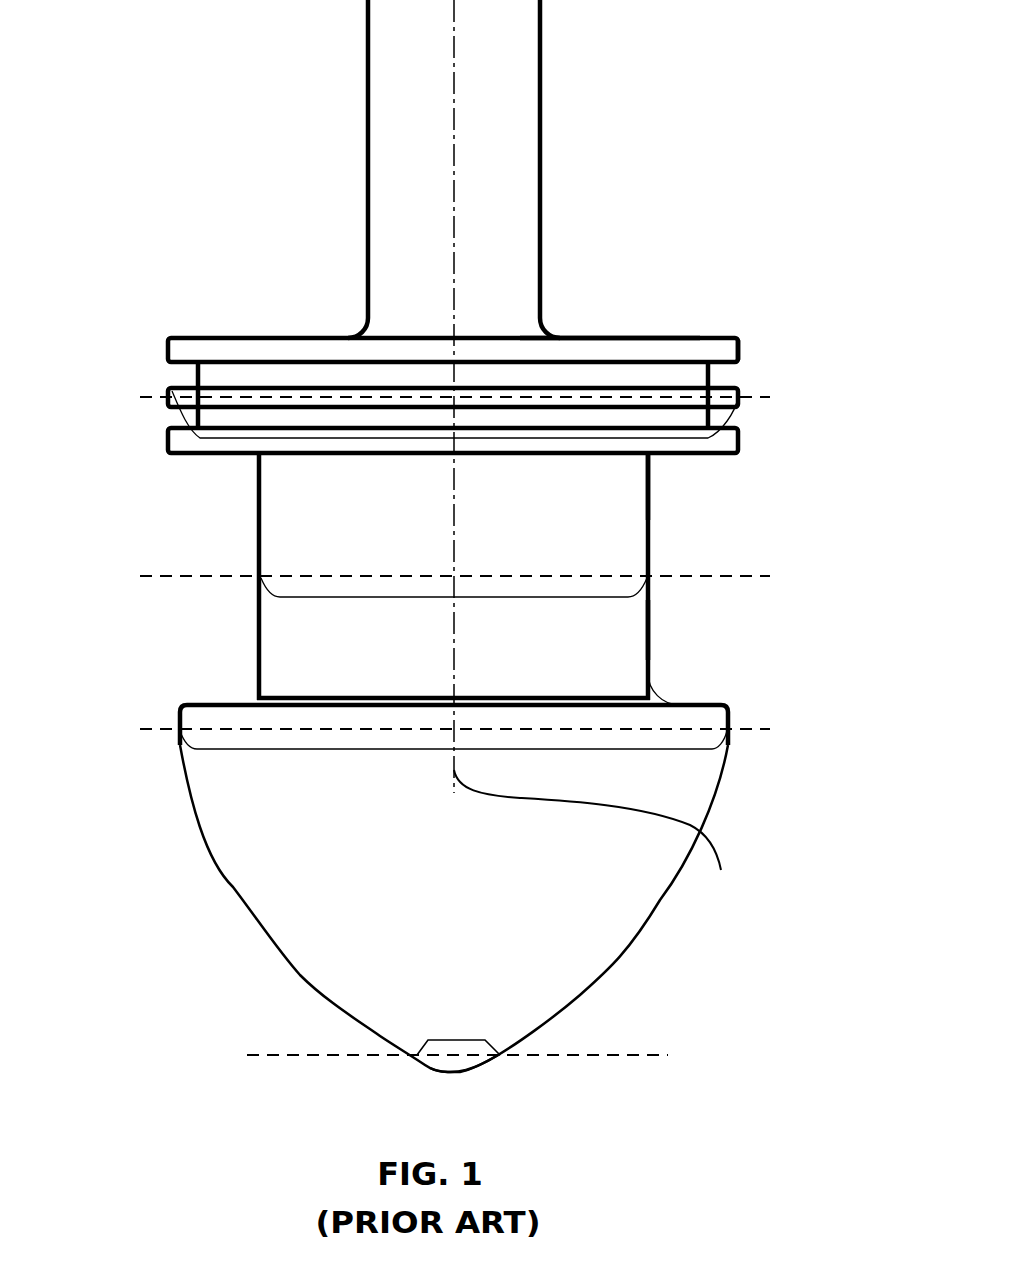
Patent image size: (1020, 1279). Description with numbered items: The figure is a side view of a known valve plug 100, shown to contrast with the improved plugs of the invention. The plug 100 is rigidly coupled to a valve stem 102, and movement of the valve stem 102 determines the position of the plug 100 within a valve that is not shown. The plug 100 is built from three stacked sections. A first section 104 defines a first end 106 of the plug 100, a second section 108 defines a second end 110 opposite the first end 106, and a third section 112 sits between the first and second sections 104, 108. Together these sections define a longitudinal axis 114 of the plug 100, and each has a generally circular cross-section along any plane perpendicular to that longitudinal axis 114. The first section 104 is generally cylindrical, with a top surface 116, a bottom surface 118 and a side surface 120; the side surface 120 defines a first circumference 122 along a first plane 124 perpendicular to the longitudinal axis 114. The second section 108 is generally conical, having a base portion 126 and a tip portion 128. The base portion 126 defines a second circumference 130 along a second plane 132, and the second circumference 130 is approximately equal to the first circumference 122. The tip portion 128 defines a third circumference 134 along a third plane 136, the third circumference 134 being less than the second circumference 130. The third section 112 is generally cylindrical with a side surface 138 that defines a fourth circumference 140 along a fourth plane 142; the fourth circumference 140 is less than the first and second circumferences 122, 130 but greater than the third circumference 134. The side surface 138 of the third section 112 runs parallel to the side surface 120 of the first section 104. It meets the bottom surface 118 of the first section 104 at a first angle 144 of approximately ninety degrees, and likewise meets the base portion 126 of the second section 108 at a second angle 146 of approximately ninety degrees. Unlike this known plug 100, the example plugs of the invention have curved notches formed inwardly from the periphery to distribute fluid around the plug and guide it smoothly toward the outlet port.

The valve plug 100 is at (714, 228).
The valve stem 102 is at (368, 182).
The first section 104 is at (460, 402).
The first end 106 is at (302, 338).
The second section 108 is at (461, 887).
The second end 110 is at (455, 1073).
The third section 112 is at (461, 579).
The longitudinal axis 114 is at (603, 833).
The top surface 116 is at (660, 338).
The bottom surface 118 is at (718, 453).
The side surface 120 is at (740, 352).
The first circumference 122 is at (338, 440).
The first plane 124 is at (760, 397).
The base portion 126 is at (721, 705).
The tip portion 128 is at (488, 1062).
The second circumference 130 is at (324, 750).
The second plane 132 is at (762, 729).
The third circumference 134 is at (461, 1040).
The third plane 136 is at (615, 1055).
The side surface 138 is at (650, 633).
The fourth circumference 140 is at (363, 598).
The fourth plane 142 is at (762, 577).
The first angle 144 is at (651, 472).
The second angle 146 is at (650, 679).